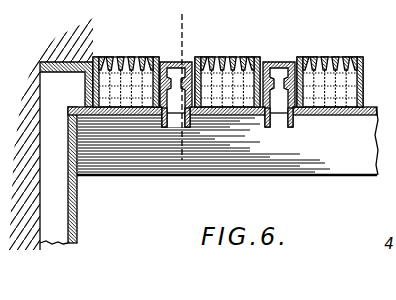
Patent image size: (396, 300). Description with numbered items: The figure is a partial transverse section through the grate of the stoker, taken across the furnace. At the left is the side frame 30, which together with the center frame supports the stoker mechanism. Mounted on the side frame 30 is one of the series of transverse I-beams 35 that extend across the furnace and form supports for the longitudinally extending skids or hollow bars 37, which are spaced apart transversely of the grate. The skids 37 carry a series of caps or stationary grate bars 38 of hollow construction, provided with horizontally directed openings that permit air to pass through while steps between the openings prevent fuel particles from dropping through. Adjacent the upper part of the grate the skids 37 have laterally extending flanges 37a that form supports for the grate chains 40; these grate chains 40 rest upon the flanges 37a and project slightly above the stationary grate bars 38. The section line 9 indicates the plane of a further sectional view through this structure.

The section line 9- 9 is at (170, 40).
The side frame 30 is at (78, 205).
The transverse I-beam 35 is at (252, 163).
The skid 37 is at (161, 119).
The laterally extending flange 37a is at (201, 112).
The stationary grate bar 38 is at (187, 61).
The grate chain 40 is at (127, 54).